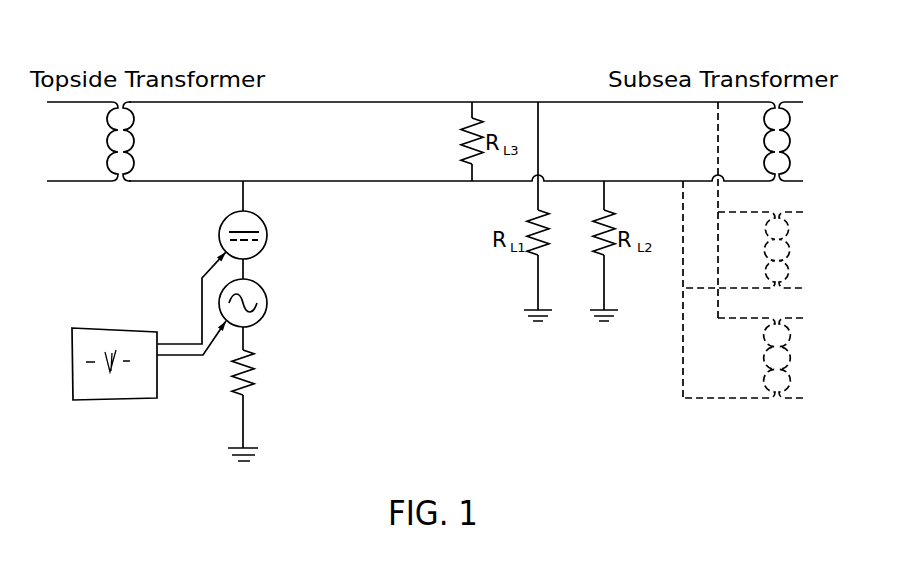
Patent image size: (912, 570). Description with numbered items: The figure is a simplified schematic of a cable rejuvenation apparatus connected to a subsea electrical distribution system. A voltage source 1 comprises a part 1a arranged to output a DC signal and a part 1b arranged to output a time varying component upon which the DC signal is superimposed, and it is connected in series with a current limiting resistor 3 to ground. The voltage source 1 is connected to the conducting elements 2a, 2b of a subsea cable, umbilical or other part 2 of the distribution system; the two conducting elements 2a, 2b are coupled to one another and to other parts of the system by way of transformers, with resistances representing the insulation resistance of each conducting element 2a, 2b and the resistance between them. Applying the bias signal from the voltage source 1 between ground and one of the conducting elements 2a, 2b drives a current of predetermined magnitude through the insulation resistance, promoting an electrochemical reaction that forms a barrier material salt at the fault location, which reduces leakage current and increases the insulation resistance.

The voltage source 1 is at (224, 290).
The part arranged to output a DC signal 1a is at (219, 235).
The part arranged to output a time varying component 1b is at (219, 303).
The part of a subsea electrical distribution system 2 is at (155, 190).
The conducting element 2a is at (320, 101).
The conducting element 2b is at (362, 181).
The current limiting resistor 3 is at (256, 376).